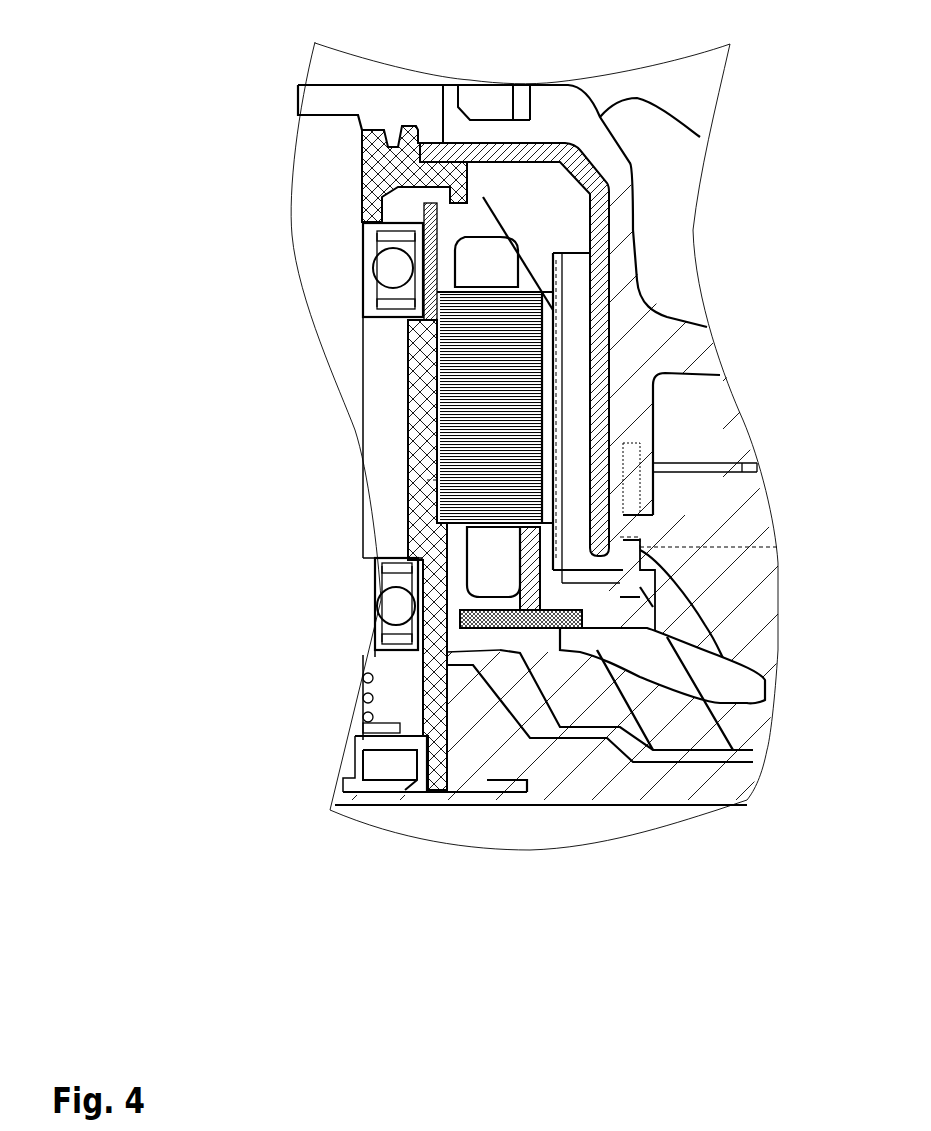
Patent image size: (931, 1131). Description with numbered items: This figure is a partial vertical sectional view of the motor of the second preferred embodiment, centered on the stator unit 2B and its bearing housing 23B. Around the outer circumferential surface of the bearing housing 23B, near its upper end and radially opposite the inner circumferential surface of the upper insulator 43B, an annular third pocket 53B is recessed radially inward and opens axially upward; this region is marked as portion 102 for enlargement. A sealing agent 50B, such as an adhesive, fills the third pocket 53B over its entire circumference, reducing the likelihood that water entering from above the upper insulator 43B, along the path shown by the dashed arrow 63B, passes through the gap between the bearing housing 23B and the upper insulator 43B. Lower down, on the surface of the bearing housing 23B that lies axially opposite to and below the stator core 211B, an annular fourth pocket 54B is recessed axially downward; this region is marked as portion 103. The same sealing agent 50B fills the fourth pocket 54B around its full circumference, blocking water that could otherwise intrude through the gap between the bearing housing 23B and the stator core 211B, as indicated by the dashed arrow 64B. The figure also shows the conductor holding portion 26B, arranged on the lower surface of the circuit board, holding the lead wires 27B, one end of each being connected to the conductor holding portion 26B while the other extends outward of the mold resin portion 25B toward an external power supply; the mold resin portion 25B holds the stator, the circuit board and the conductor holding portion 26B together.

The portion 102 is at (380, 152).
The sealing agent 50B is at (427, 210).
The third pocket 53B is at (423, 267).
The bearing housing 23B is at (407, 422).
The portion 103 is at (427, 493).
The fourth pocket 54B is at (440, 520).
The dashed arrow 64B is at (447, 657).
The dashed arrow 63B is at (530, 290).
The upper insulator 43B is at (500, 288).
The stator core 211B is at (608, 250).
The conductor holding portion 26B is at (533, 637).
The lead wires 27B is at (590, 637).
The mold resin portion 25B is at (663, 713).
The stator unit 2B is at (803, 830).